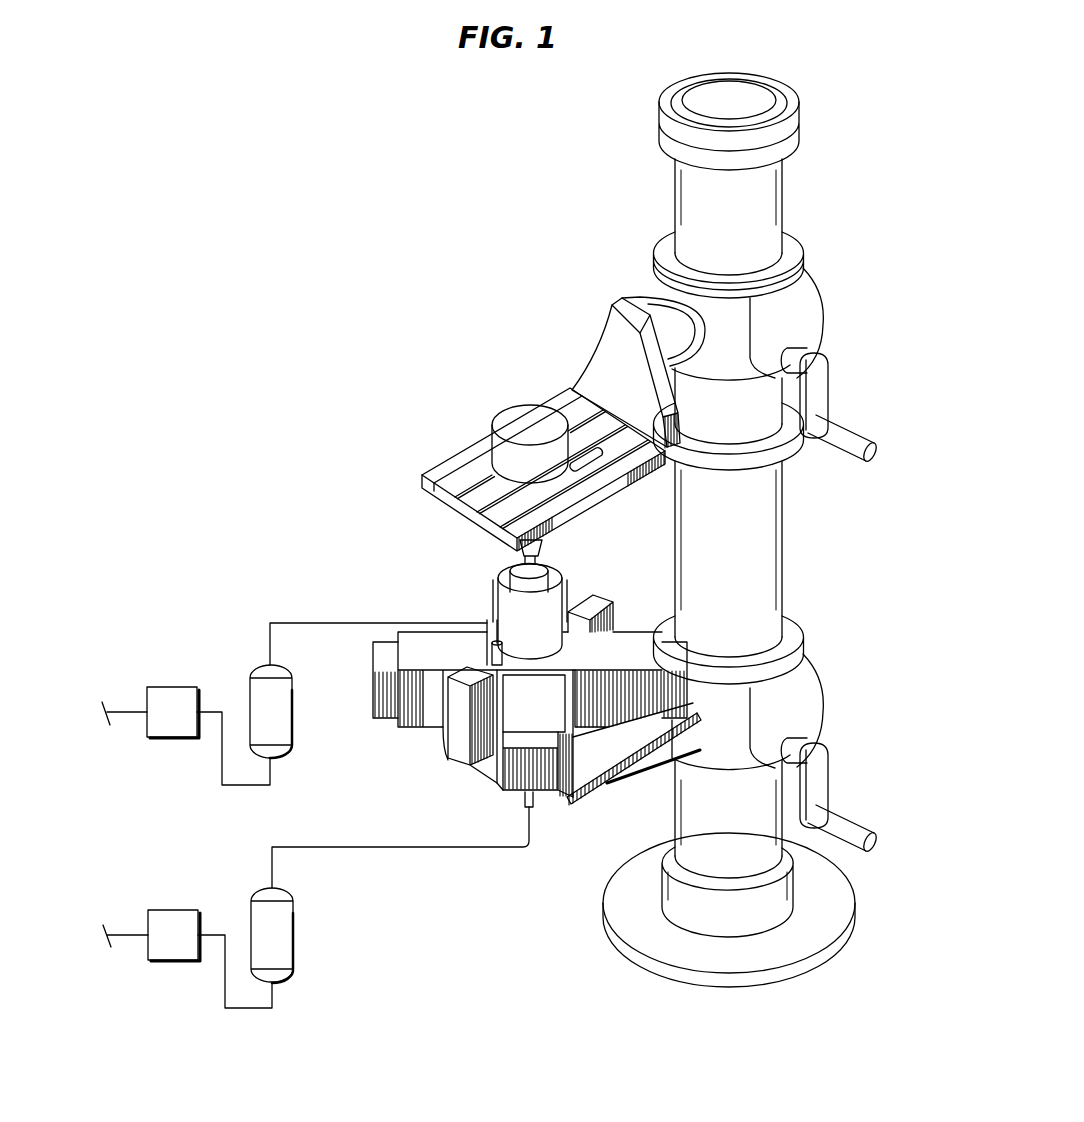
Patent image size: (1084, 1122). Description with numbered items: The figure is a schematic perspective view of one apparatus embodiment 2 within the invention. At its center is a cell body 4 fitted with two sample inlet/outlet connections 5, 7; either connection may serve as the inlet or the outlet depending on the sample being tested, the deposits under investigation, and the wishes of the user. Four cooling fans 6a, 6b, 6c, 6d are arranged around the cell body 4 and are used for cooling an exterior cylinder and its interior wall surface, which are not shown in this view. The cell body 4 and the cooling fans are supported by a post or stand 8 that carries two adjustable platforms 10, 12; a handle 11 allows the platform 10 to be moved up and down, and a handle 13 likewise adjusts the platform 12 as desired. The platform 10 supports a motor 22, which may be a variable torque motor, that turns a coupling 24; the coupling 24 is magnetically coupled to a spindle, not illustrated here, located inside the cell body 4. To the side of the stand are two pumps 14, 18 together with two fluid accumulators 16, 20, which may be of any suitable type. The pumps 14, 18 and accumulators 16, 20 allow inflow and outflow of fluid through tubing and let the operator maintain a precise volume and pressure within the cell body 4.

The apparatus embodiment 2 is at (491, 170).
The cell body 4 is at (595, 615).
The sample inlet/outlet connection 5 is at (492, 657).
The cooling fan 6a is at (372, 655).
The cooling fan 6b is at (515, 782).
The cooling fan 6c is at (625, 645).
The cooling fan 6d is at (498, 583).
The sample inlet/outlet connection 7 is at (524, 800).
The post or stand 8 is at (782, 187).
The adjustable platform 10 is at (590, 310).
The handle 11 is at (866, 431).
The adjustable platform 12 is at (578, 785).
The handle 13 is at (866, 823).
The pump 14 is at (186, 724).
The fluid accumulator 16 is at (286, 724).
The pump 18 is at (187, 947).
The fluid accumulator 20 is at (287, 947).
The motor 22 is at (524, 417).
The coupling 24 is at (510, 605).